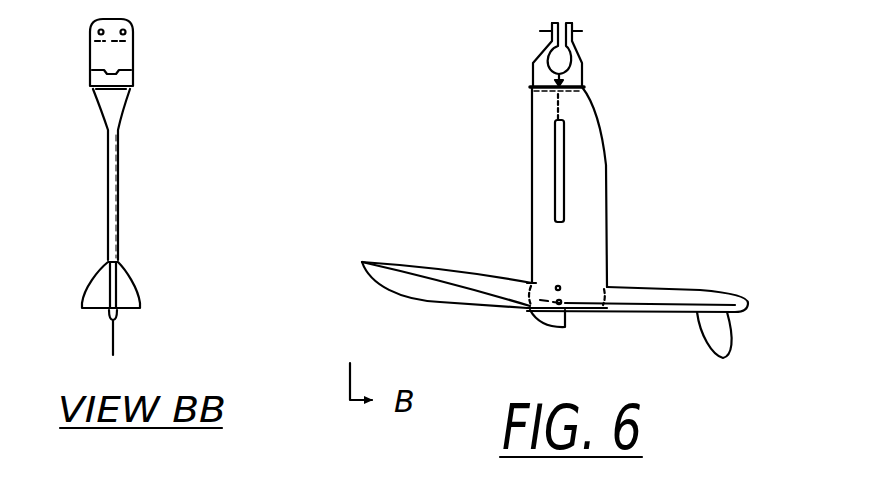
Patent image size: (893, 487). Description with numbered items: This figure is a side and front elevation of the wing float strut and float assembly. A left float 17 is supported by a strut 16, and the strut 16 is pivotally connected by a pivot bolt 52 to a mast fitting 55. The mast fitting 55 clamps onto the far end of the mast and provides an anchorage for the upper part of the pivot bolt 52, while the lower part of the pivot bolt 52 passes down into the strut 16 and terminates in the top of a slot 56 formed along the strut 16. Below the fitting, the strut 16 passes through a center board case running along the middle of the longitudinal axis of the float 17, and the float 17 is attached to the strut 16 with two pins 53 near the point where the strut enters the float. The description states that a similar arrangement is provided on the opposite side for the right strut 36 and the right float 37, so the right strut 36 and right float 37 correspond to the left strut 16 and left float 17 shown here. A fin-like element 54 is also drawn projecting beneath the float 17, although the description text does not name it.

The strut 16 is at (625, 197).
The right strut 36 is at (625, 197).
The left float 17 is at (555, 290).
The right float 37 is at (555, 290).
The pivot bolt 52 is at (554, 98).
The pins 53 is at (551, 277).
The fin 54 is at (741, 338).
The mast fitting 55 is at (583, 49).
The slot 56 is at (552, 172).